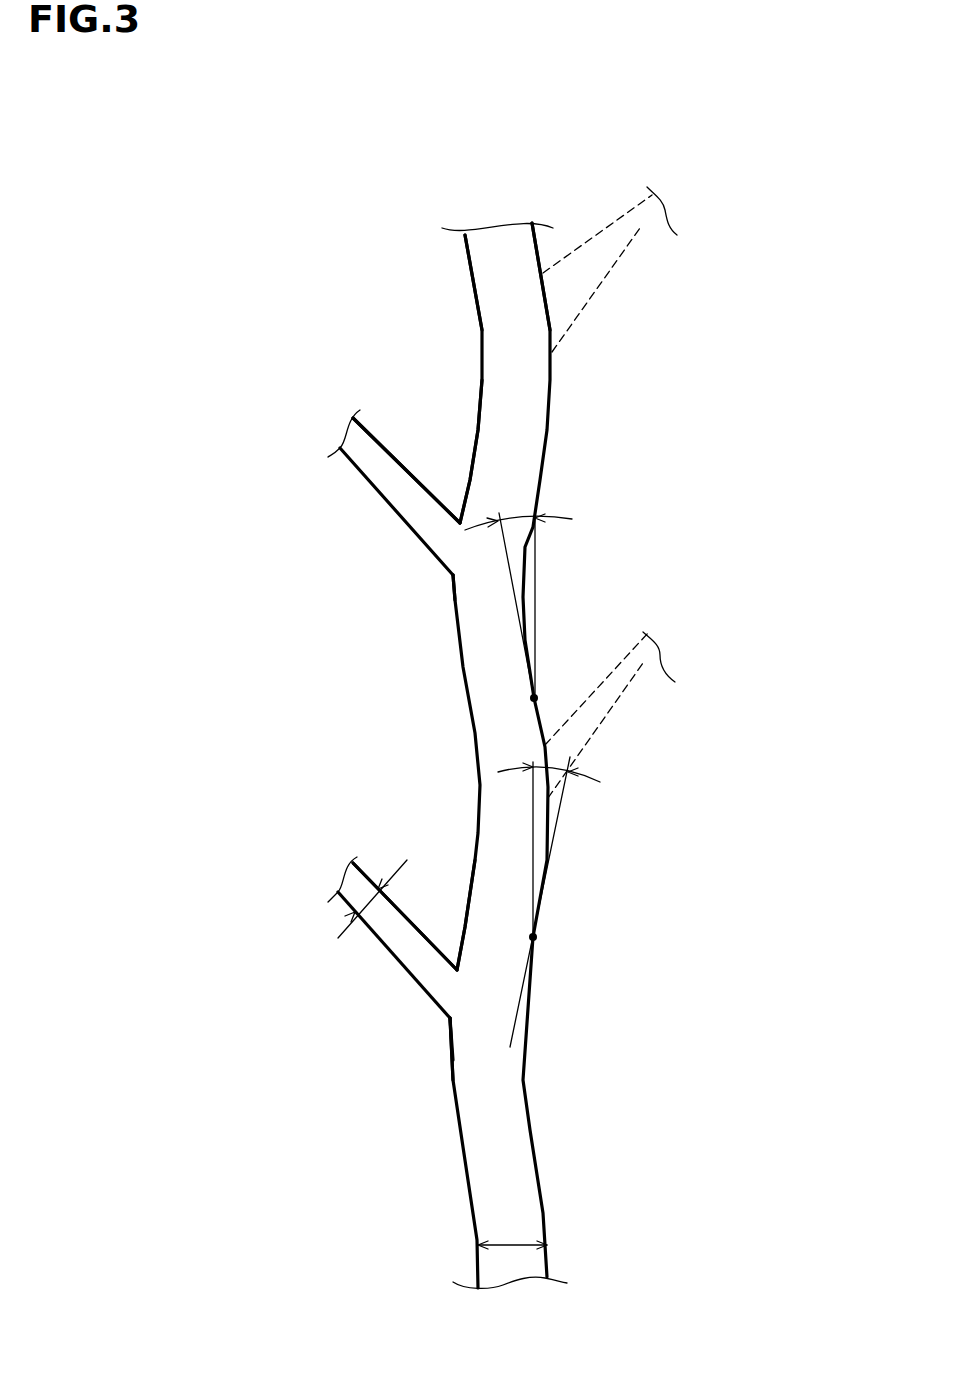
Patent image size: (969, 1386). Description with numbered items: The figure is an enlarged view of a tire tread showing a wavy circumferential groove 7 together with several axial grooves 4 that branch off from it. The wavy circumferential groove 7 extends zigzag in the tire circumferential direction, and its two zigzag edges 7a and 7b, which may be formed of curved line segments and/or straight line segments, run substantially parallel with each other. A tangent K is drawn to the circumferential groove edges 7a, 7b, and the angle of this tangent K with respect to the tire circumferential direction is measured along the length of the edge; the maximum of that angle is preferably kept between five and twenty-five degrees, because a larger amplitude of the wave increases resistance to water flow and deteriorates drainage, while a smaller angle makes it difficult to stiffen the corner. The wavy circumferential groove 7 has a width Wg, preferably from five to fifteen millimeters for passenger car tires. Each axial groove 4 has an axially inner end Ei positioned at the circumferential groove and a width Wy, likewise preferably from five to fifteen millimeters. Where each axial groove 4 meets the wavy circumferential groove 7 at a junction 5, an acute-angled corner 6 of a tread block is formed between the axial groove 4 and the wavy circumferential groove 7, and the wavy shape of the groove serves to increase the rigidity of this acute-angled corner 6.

The wavy circumferential groove 7 is at (502, 242).
The zigzag edge 7a is at (473, 282).
The zigzag edge 7b is at (543, 273).
The axial groove 4 is at (645, 230).
The junction 5 is at (442, 575).
The acute-angled corner 6 is at (438, 448).
The tangent K is at (512, 590).
The width of axial groove Wy is at (352, 900).
The width of wavy circumferential groove Wg is at (510, 1243).
The axially inner end Ei is at (438, 1047).